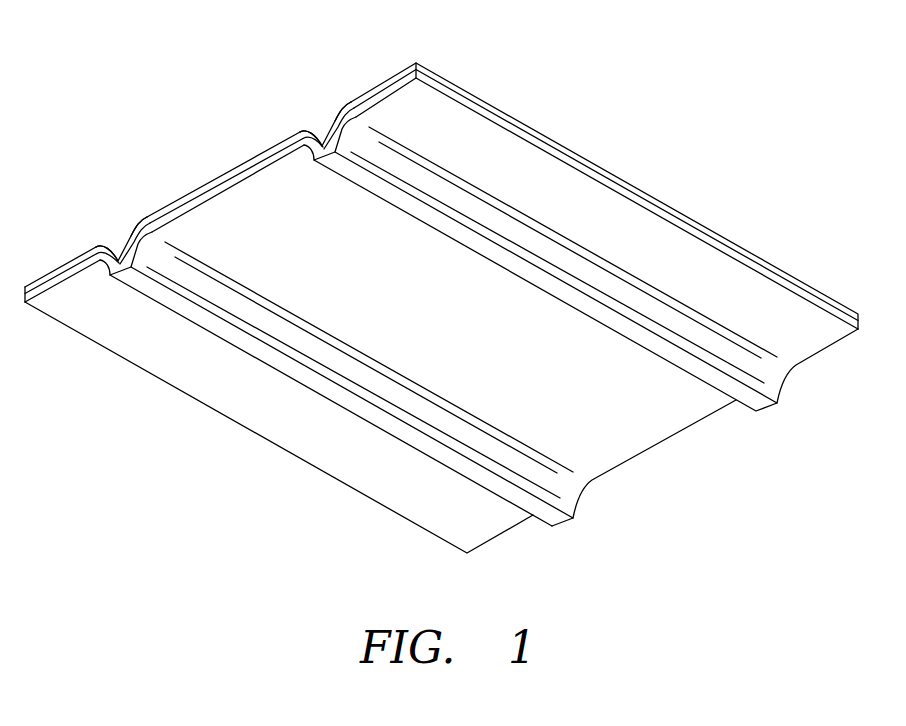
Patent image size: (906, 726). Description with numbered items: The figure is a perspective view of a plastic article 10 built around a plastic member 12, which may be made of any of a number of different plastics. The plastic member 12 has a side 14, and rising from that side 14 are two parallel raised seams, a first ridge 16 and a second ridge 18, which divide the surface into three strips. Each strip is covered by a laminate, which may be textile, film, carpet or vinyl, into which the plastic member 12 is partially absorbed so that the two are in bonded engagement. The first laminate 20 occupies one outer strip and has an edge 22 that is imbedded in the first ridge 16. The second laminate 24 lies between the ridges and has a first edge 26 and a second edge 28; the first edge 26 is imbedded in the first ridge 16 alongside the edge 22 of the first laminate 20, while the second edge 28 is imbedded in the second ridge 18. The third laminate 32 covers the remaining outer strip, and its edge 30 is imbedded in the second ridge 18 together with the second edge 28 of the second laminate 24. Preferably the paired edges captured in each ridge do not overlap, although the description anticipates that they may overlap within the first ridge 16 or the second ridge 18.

The plastic article 10 is at (433, 300).
The plastic member 12 is at (648, 418).
The side 14 is at (355, 463).
The first ridge 16 is at (321, 124).
The second ridge 18 is at (117, 230).
The first laminate 20 is at (389, 78).
The edge 22 is at (333, 118).
The second laminate 24 is at (208, 181).
The first edge 26 is at (304, 127).
The second edge 28 is at (127, 243).
The edge 30 is at (107, 244).
The third laminate 32 is at (48, 274).